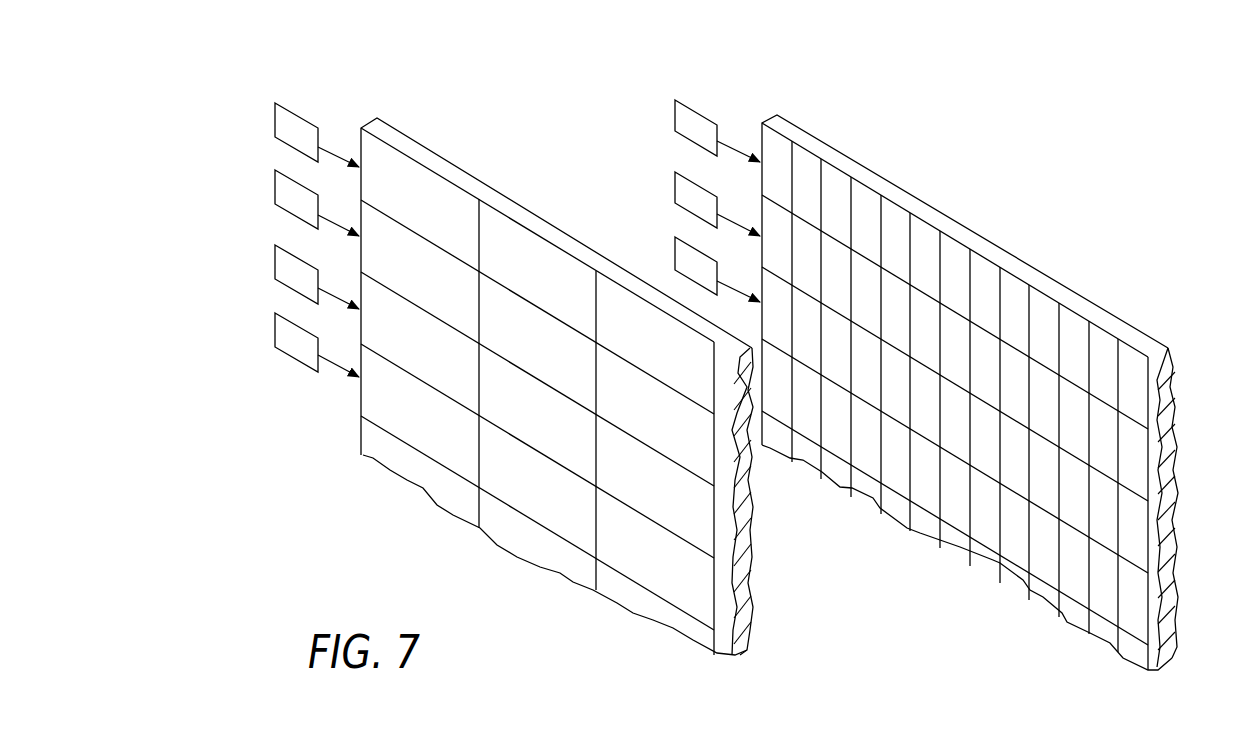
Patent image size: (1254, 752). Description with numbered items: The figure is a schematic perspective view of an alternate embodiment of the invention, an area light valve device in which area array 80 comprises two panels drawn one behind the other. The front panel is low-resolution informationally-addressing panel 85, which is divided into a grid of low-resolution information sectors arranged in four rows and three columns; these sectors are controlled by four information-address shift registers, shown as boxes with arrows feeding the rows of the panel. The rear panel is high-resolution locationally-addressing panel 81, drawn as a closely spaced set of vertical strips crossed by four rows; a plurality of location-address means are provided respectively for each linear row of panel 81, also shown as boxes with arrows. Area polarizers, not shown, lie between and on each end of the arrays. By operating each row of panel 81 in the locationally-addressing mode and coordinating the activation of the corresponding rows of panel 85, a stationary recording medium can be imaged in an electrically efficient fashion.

The area array 80 is at (582, 52).
The low-resolution informationally-addressing panel 85 is at (750, 625).
The high-resolution locationally-addressing panel 81 is at (1170, 634).